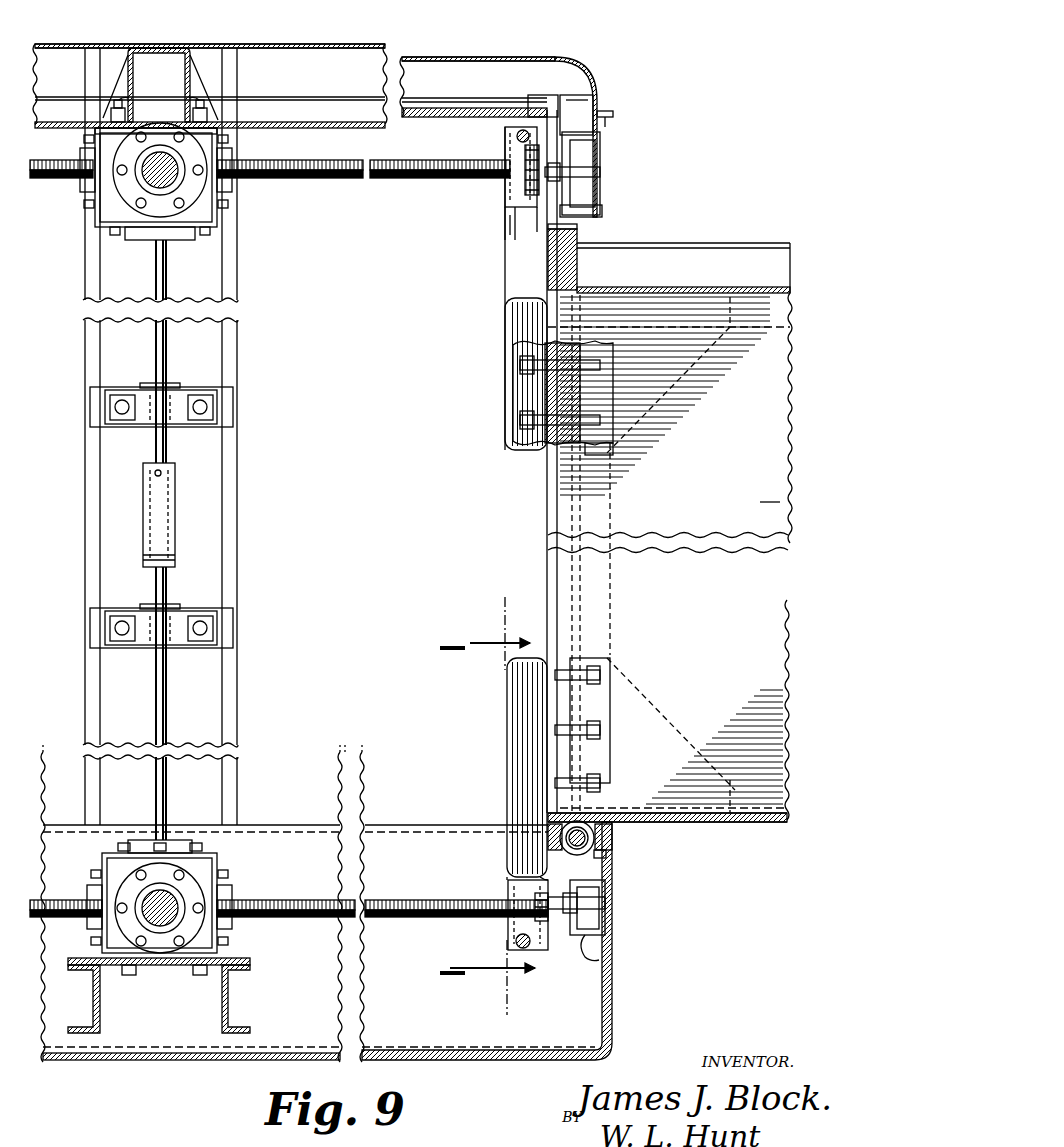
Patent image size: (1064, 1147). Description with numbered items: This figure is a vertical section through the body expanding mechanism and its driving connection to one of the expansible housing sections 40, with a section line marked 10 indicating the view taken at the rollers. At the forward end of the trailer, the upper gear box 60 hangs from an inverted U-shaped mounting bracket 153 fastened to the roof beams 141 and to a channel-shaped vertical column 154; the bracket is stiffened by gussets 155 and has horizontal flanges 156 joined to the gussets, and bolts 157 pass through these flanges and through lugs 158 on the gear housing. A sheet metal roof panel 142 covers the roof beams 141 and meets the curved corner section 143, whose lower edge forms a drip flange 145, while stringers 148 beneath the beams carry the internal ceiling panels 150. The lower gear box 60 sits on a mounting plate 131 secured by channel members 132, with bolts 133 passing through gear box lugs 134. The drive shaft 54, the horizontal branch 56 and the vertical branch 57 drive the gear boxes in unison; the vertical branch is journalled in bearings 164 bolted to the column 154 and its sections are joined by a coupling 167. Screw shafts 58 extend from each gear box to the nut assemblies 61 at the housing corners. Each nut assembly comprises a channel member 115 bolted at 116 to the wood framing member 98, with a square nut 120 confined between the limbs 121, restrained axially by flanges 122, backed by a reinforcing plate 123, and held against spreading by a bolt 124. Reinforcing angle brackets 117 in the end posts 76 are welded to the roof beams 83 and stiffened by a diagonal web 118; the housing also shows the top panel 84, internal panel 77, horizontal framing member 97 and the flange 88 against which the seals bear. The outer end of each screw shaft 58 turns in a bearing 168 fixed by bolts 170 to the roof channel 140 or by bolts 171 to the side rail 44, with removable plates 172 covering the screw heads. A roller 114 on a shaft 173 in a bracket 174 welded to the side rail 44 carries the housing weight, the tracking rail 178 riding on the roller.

The section line 10- 10 is at (487, 806).
The expansible housing section 40 is at (782, 425).
The side rail 44 is at (614, 1011).
The drive shaft 54 is at (162, 940).
The horizontal branch of drive shaft 56 is at (164, 207).
The vertical branch of drive shaft 57 is at (152, 338).
The screw shaft 58 is at (55, 182).
The gear box 60 is at (108, 218).
The nut assembly 61 is at (500, 298).
The end post 76 is at (604, 454).
The internal panel 77 is at (782, 493).
The horizontal roof beam 83 is at (755, 260).
The top panel 84 is at (696, 244).
The vertical flange 88 is at (579, 231).
The horizontal framing member 97 is at (578, 269).
The vertical framing member 98 is at (530, 400).
The roller 114 is at (595, 840).
The channel shaped member 115 is at (514, 330).
The bolt 116 is at (530, 380).
The reinforcing angle bracket 117 is at (622, 420).
The web 118 is at (690, 370).
The nut 120 is at (505, 193).
The limb 121 is at (526, 111).
The flange 122 is at (505, 152).
The plate 123 is at (512, 218).
The bolt 124 is at (505, 130).
The mounting plate 131 is at (242, 959).
The channel member 132 is at (82, 990).
The bolt 133 is at (202, 975).
The gear box lug 134 is at (131, 975).
The roof channel 140 is at (600, 100).
The roof beam 141 is at (470, 72).
The roof panel 142 is at (355, 45).
The curved corner section 143 is at (592, 78).
The drip flange 145 is at (606, 114).
The longitudinal stringer 148 is at (545, 95).
The internal ceiling panel 150 is at (342, 128).
The mounting bracket 153 is at (190, 55).
The vertical column 154 is at (232, 364).
The gusset 155 is at (105, 80).
The horizontal flange 156 is at (111, 113).
The bolt 157 is at (194, 104).
The lug 158 is at (218, 146).
The bearing 164 is at (178, 392).
The coupling 167 is at (172, 517).
The bearing 168 is at (590, 156).
The bolt 170 is at (600, 209).
The bolt 171 is at (601, 960).
The removable plate 172 is at (600, 175).
The shaft 173 is at (584, 832).
The bracket 174 is at (616, 852).
The tracking rail 178 is at (788, 825).